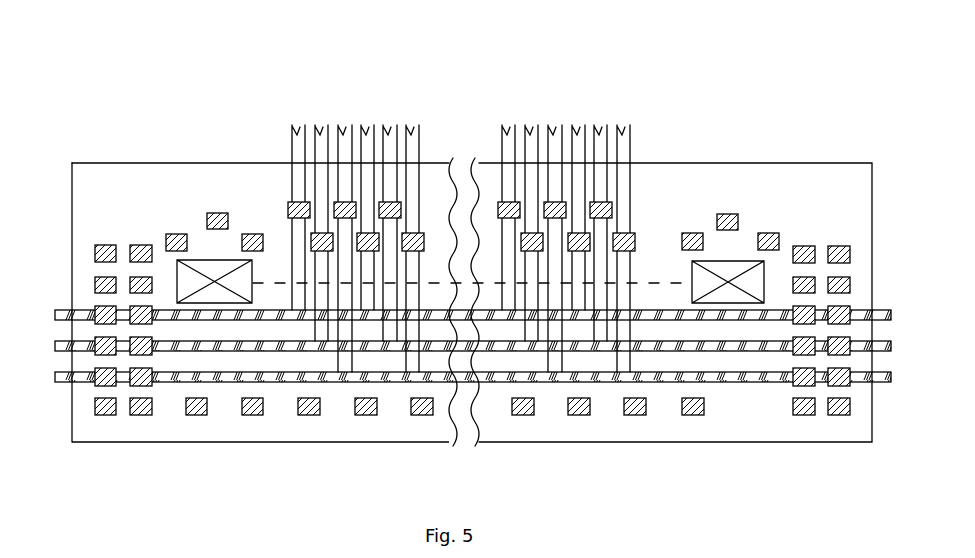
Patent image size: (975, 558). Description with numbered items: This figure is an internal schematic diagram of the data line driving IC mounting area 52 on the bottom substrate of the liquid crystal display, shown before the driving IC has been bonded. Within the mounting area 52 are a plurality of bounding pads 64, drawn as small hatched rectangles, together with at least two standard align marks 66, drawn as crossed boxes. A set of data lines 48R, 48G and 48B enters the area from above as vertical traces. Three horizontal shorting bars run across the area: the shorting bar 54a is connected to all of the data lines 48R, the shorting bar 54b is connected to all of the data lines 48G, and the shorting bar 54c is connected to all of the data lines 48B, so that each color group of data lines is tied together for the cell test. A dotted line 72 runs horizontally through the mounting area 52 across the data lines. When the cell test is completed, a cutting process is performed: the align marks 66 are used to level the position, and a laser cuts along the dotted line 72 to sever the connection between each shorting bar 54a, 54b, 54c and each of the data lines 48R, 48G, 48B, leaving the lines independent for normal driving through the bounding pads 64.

The data line driving IC mounting area 52 is at (841, 163).
The shorting bar 54a is at (62, 312).
The shorting bar 54b is at (62, 342).
The shorting bar 54c is at (62, 372).
The data lines 48R is at (299, 135).
The data lines 48G is at (323, 135).
The data lines 48B is at (345, 135).
The bounding pads 64 is at (222, 213).
The standard align marks 66 is at (195, 260).
The dotted line 72 is at (667, 283).